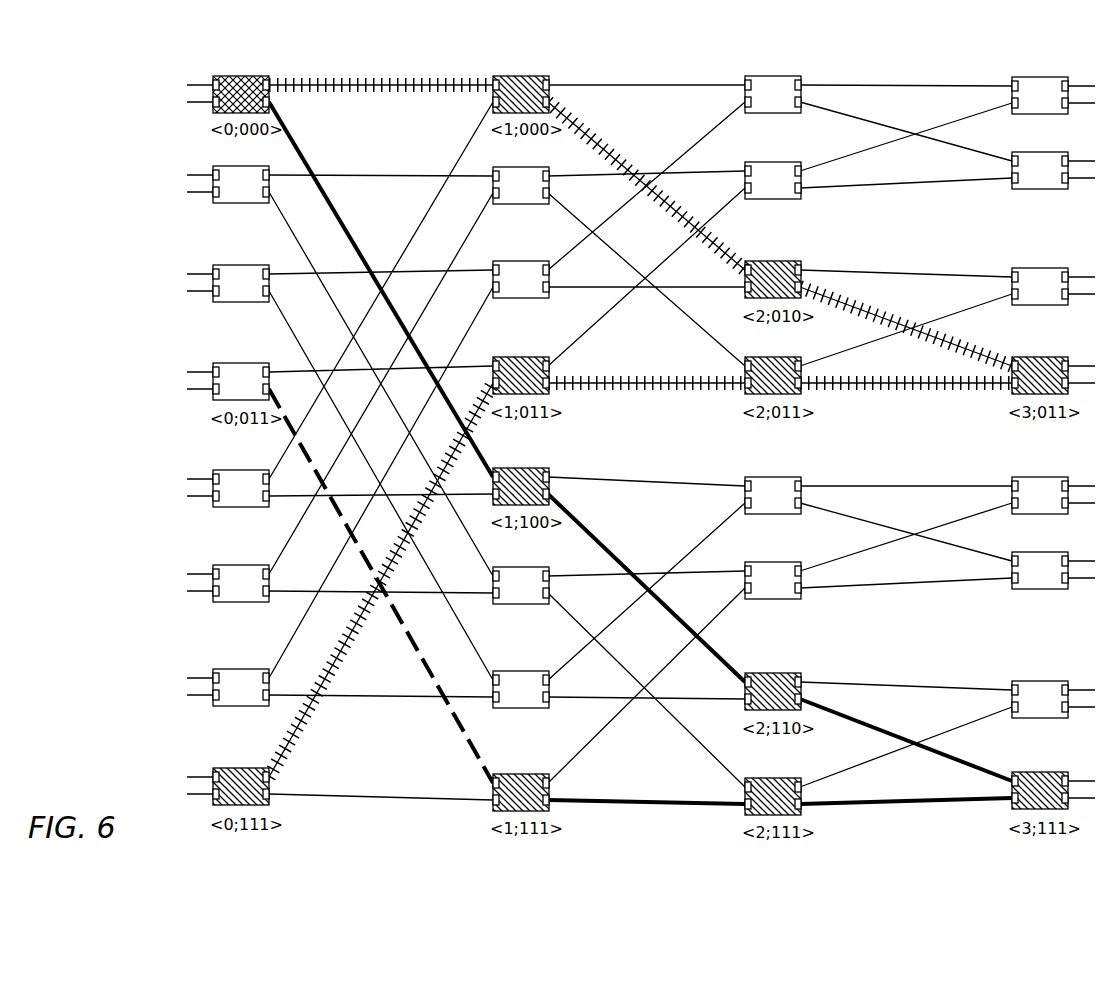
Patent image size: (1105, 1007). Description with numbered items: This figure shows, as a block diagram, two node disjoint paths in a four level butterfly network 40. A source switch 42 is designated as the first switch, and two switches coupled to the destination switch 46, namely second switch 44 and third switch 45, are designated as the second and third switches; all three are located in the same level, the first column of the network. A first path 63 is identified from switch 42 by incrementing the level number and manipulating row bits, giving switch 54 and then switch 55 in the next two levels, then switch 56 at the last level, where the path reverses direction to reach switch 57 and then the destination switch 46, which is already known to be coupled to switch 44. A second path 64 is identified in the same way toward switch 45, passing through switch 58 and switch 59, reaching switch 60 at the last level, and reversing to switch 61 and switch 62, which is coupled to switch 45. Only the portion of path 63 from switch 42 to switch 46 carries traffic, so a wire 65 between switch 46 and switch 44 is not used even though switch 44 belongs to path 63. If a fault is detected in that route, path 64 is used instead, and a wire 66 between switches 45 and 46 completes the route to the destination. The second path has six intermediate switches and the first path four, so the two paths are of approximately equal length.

The butterfly network 40 is at (124, 68).
The source switch 42 is at (259, 77).
The second switch 44 is at (241, 376).
The third switch 45 is at (241, 780).
The destination switch 46 is at (520, 782).
The switch 54 is at (530, 473).
The switch 55 is at (775, 681).
The switch 56 is at (1037, 778).
The switch 57 is at (790, 812).
The switch 58 is at (532, 80).
The switch 59 is at (775, 270).
The switch 60 is at (1037, 362).
The switch 61 is at (796, 396).
The switch 62 is at (520, 369).
The first path 63 is at (306, 148).
The second path 64 is at (396, 74).
The wire 65 is at (456, 722).
The wire 66 is at (388, 798).